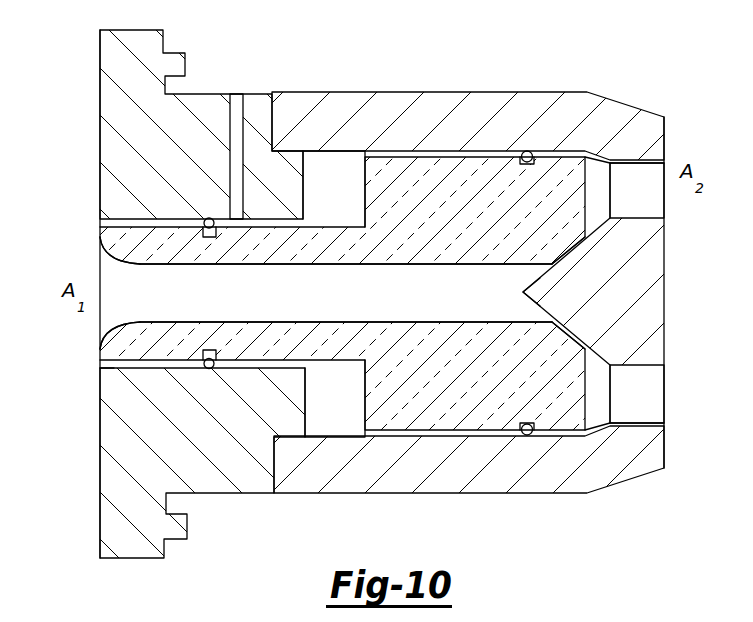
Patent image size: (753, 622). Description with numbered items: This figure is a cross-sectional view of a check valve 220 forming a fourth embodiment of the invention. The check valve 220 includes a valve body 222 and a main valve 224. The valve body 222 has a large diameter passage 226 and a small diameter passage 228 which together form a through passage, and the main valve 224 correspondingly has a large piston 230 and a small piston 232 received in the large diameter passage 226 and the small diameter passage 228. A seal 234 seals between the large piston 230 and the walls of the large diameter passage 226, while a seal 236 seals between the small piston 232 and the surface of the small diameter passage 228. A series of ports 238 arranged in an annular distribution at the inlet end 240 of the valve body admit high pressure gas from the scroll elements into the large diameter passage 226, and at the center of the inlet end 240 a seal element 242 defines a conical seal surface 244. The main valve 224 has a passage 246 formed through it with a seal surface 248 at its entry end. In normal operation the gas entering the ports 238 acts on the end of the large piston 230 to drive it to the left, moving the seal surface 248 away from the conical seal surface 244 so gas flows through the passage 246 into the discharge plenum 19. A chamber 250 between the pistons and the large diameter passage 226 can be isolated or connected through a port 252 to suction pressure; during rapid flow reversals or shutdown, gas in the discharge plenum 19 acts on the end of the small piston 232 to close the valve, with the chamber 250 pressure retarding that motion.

The discharge plenum 19 is at (49, 247).
The check valve 220 is at (419, 84).
The valve body 222 is at (172, 159).
The main valve 224 is at (490, 204).
The large diameter passage 226 is at (327, 423).
The small diameter passage 228 is at (113, 368).
The large piston 230 is at (470, 422).
The small piston 232 is at (346, 293).
The seal 234 is at (527, 150).
The seal 236 is at (211, 236).
The ports 238 is at (649, 207).
The inlet end 240 is at (730, 324).
The seal element 242 is at (647, 294).
The conical seal surface 244 is at (537, 281).
The passage 246 is at (155, 304).
The seal surface 248 is at (577, 333).
The chamber 250 is at (338, 165).
The port 252 is at (238, 96).